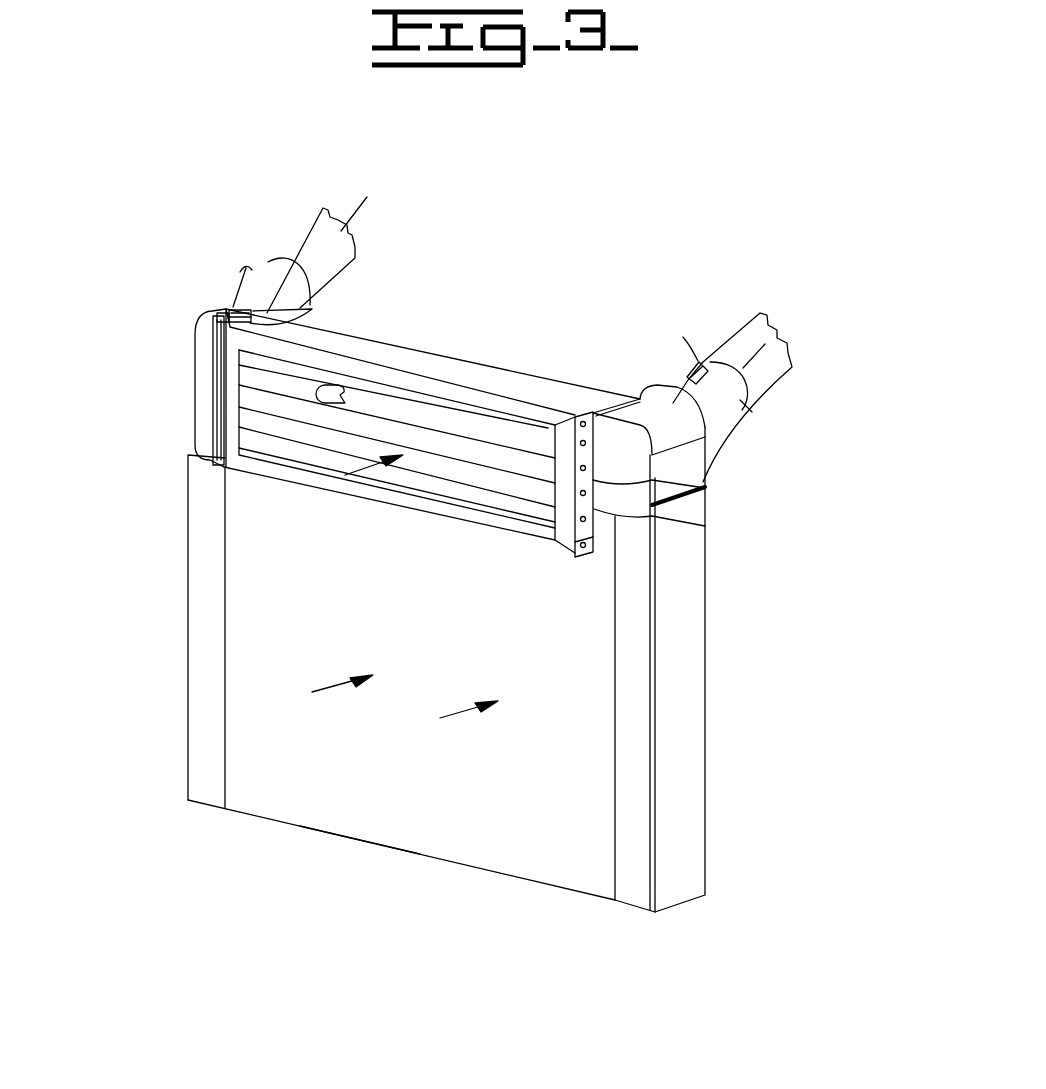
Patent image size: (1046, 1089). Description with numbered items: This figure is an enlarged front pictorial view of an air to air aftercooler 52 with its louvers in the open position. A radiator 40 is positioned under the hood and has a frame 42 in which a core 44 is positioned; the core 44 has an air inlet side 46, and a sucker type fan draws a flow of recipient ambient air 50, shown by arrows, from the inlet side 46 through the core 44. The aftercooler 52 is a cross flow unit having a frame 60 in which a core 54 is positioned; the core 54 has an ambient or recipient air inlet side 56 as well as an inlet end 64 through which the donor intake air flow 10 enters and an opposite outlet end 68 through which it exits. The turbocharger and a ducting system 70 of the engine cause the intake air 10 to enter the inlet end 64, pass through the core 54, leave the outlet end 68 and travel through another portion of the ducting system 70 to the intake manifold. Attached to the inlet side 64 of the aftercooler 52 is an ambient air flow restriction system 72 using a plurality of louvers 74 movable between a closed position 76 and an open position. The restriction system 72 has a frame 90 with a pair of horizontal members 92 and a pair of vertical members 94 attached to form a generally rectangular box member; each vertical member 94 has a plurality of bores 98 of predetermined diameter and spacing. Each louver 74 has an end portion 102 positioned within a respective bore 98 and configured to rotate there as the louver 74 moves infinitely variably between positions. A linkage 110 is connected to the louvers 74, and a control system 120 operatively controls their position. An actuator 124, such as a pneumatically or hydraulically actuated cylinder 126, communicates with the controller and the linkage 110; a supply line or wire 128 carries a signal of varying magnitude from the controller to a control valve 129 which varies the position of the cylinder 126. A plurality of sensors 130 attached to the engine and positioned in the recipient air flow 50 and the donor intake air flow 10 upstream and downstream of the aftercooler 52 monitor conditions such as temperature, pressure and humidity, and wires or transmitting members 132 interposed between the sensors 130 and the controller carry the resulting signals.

The donor intake air flow 10 is at (367, 197).
The radiator 40 is at (657, 713).
The frame 42 is at (222, 636).
The core 44 is at (478, 823).
The air inlet side 46 is at (410, 823).
The flow of recipient ambient air 50 is at (455, 718).
The aftercooler 52 is at (350, 326).
The core 54 is at (333, 383).
The ambient or recipient air inlet side 56 is at (329, 404).
The frame 60 is at (706, 488).
The inlet end or side 64 is at (267, 313).
The outlet end or side 68 is at (727, 428).
The ducting system 70 is at (297, 226).
The ambient air flow restriction system 72 is at (433, 188).
The louvers 74 is at (456, 446).
The closed position 76 is at (490, 435).
The frame 90 is at (557, 424).
The horizontal members 92 is at (468, 392).
The vertical members 94 is at (596, 538).
The bores 98 is at (579, 547).
The end portion 102 is at (233, 398).
The linkage 110 is at (214, 368).
The control system 120 is at (157, 484).
The actuator 124 is at (300, 315).
The cylinder 126 is at (218, 318).
The supply line or wire 128 is at (230, 311).
The control valve 129 is at (228, 313).
The sensors 130 is at (746, 407).
The wires or transmitting members 132 is at (683, 337).